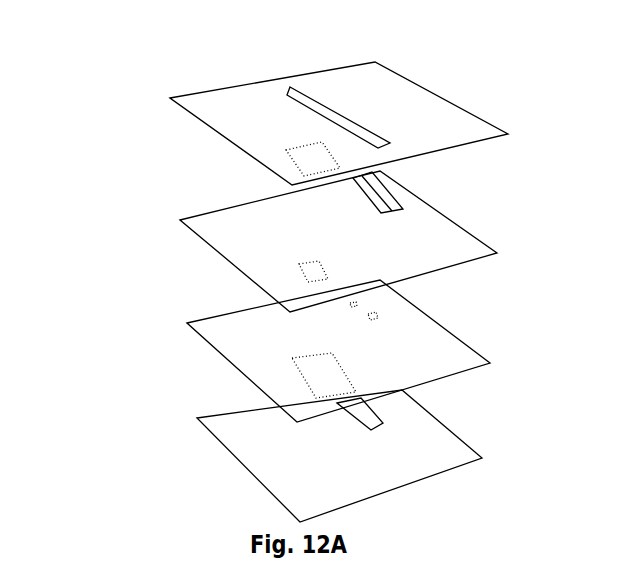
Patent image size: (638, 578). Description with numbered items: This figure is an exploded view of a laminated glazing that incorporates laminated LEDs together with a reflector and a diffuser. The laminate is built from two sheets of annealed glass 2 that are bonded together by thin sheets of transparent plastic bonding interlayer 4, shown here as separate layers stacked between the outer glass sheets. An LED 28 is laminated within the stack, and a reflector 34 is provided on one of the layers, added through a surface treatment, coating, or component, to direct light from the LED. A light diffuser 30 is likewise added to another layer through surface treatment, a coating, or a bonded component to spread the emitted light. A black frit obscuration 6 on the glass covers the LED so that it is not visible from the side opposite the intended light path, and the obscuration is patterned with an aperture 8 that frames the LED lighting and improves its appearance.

The glass 2 is at (172, 99).
The plastic bonding interlayer 4 is at (180, 219).
The obscuration 6 is at (238, 107).
The aperture 8 is at (292, 96).
The diffuser 30 is at (395, 207).
The LED 28 is at (385, 317).
The reflector 34 is at (388, 419).